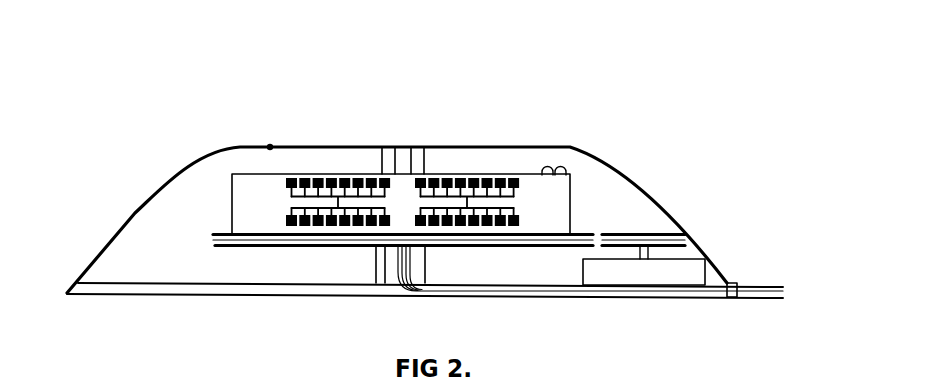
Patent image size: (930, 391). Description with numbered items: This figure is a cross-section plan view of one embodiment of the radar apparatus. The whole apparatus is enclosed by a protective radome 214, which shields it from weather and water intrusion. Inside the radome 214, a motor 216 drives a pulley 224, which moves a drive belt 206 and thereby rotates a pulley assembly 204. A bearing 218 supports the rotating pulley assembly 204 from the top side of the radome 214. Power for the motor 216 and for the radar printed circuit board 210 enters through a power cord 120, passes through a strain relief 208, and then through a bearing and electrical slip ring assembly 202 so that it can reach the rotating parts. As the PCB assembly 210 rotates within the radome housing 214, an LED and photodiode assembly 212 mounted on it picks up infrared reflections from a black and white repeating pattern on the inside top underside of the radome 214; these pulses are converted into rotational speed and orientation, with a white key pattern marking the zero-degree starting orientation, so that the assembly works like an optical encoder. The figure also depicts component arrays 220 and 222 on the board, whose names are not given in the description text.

The power cord 120 is at (760, 287).
The bearing and electrical slip ring assembly 202 is at (377, 264).
The pulley assembly 204 is at (223, 231).
The drive belt 206 is at (209, 238).
The strain relief 208 is at (735, 282).
The radar printed circuit board 210 is at (560, 202).
The LED and photodiode assembly 212 is at (560, 167).
The protective radome 214 is at (270, 147).
The motor 216 is at (657, 275).
The bearing 218 is at (382, 162).
The first sensor array 220 is at (340, 172).
The second sensor array 222 is at (470, 172).
The pulley 224 is at (645, 233).